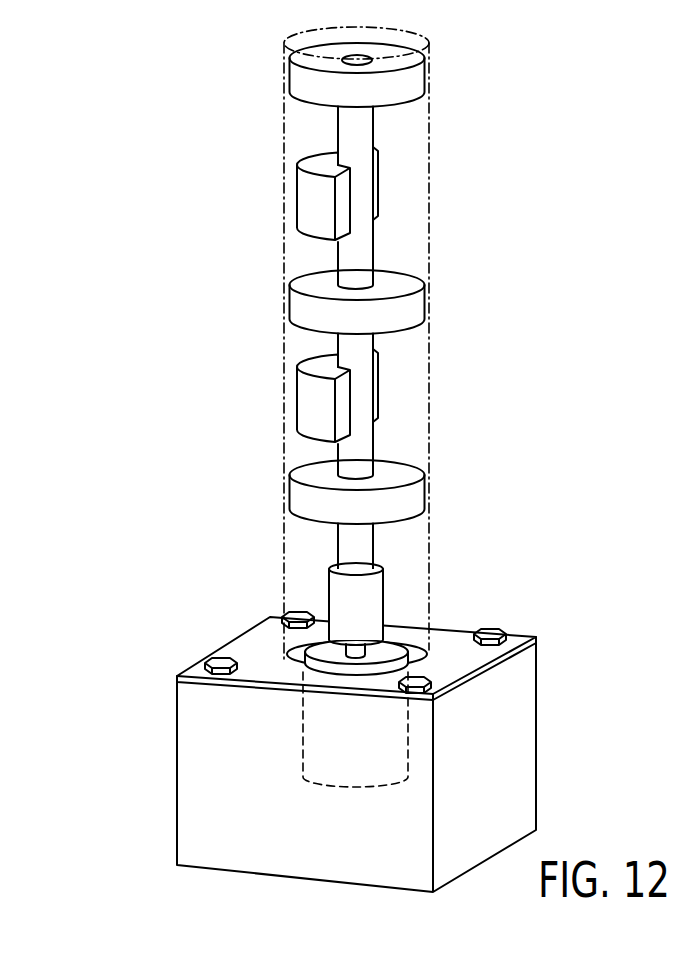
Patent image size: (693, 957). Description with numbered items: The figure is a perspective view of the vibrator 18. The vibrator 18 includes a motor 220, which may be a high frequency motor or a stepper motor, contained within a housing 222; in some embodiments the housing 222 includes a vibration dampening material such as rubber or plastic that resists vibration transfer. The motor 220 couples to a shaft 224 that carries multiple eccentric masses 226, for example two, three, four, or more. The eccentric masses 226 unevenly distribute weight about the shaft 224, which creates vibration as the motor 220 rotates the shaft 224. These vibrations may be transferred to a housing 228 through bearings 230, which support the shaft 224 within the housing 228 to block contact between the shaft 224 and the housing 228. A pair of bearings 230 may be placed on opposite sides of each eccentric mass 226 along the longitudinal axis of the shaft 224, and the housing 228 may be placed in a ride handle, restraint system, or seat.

The vibrator 18 is at (550, 305).
The motor 220 is at (563, 702).
The housing 222 is at (197, 792).
The shaft 224 is at (350, 542).
The eccentric masses 226 is at (313, 210).
The housing 228 is at (428, 140).
The bearings 230 is at (298, 84).